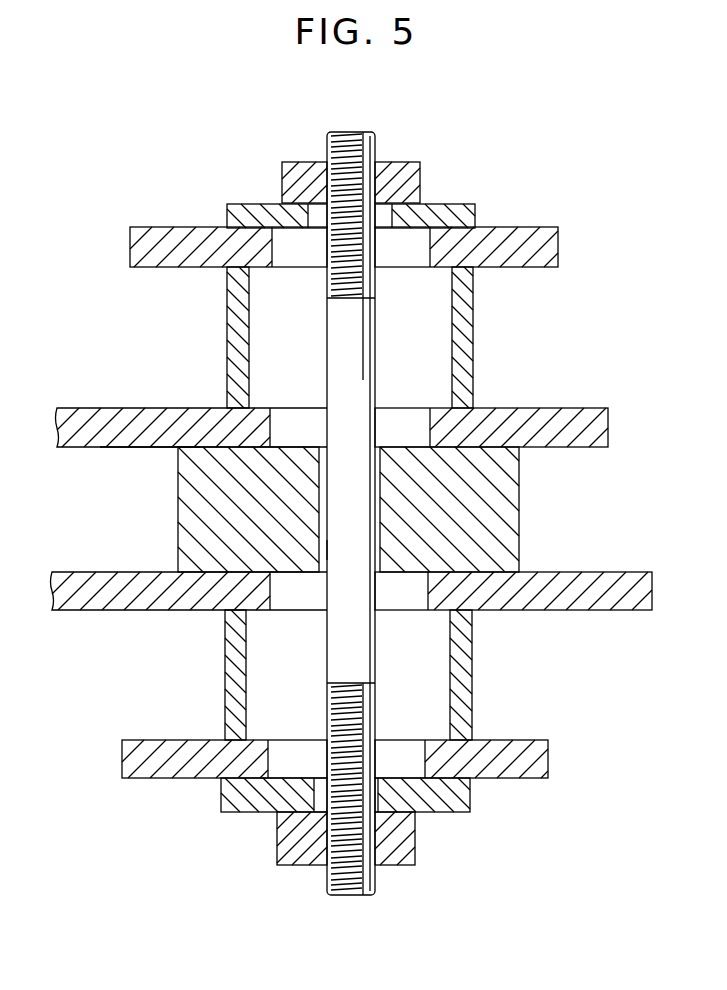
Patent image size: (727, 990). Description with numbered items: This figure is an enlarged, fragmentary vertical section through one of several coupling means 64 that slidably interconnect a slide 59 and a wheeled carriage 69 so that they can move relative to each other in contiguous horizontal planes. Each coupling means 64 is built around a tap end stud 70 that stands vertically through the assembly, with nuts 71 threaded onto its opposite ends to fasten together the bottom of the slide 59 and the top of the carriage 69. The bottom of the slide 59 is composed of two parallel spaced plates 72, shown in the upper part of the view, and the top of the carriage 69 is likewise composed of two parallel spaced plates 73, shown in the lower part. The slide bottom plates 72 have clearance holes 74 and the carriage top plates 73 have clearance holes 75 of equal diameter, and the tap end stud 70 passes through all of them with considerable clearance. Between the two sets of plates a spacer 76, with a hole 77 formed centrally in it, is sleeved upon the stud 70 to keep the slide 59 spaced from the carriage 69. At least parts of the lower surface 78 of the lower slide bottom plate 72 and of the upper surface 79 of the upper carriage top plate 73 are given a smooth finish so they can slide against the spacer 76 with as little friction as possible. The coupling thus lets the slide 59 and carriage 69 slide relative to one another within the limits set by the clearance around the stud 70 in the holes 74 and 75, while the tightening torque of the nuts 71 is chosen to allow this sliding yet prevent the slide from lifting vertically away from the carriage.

The slide 59 is at (352, 514).
The coupling means 64 is at (458, 180).
The carriage 69 is at (525, 707).
The tap end stud 70 is at (340, 338).
The nuts 71 is at (293, 166).
The slide bottom plates 72 is at (167, 237).
The carriage top plates 73 is at (176, 598).
The clearance holes 74 is at (420, 252).
The clearance holes 75 is at (427, 593).
The spacer 76 is at (500, 513).
The hole 77 is at (325, 548).
The lower surface 78 is at (122, 448).
The upper surface 79 is at (110, 572).